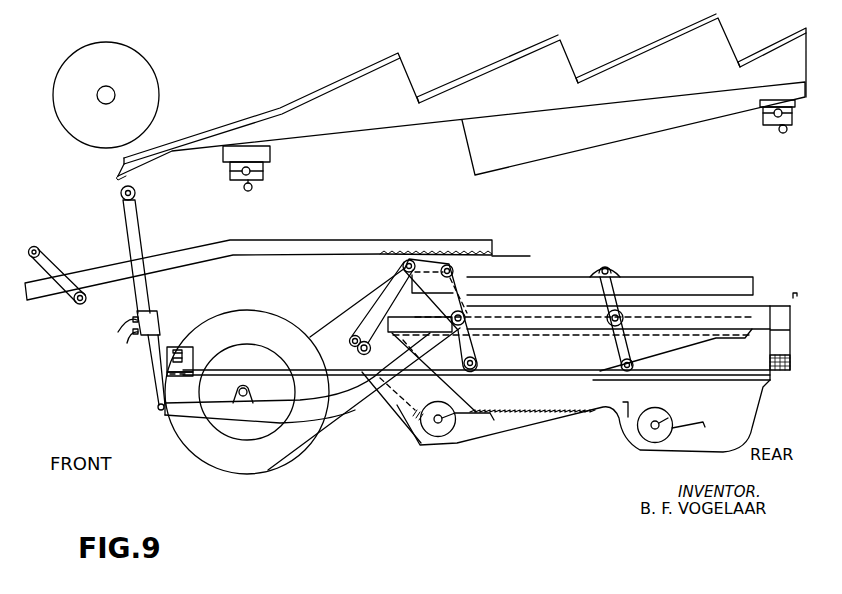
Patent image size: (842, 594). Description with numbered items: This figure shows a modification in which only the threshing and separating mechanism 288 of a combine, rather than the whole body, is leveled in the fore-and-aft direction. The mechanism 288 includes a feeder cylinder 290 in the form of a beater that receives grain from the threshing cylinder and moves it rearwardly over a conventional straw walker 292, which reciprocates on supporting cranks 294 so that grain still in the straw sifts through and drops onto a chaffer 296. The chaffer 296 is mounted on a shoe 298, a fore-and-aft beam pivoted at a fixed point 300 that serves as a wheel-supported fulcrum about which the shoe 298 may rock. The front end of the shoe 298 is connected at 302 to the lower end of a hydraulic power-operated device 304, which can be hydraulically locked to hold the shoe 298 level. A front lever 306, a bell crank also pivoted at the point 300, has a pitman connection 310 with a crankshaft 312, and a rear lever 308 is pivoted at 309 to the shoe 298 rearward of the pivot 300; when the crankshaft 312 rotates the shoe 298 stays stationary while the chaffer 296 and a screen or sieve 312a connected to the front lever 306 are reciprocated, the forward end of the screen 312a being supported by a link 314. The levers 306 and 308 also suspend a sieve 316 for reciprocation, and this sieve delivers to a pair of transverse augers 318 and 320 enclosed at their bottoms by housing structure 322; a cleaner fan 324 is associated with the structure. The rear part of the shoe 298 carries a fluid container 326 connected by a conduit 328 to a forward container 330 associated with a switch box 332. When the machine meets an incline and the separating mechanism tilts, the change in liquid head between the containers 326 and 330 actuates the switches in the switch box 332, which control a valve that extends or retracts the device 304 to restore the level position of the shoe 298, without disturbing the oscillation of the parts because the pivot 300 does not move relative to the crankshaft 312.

The threshing mechanism 288 is at (306, 74).
The feeder cylinder 290 is at (150, 75).
The straw walker 292 is at (495, 75).
The supporting cranks 294 is at (253, 187).
The chaffer 296 is at (713, 282).
The shoe 298 is at (773, 310).
The pivot 300 is at (473, 333).
The connection 302 is at (157, 412).
The power-operated device 304 is at (132, 237).
The front lever 306 is at (452, 288).
The rear lever 308 is at (610, 287).
The pivot 309 is at (614, 326).
The pitman connection 310 is at (380, 302).
The crankshaft 312 is at (350, 345).
The screen or sieve 312a is at (335, 242).
The link 314 is at (57, 246).
The sieve 316 is at (531, 392).
The transverse auger 318 is at (438, 437).
The transverse auger 320 is at (650, 437).
The housing structure 322 is at (600, 408).
The cleaner fan 324 is at (285, 450).
The fluid container 326 is at (789, 373).
The conduit 328 is at (728, 382).
The forward container 330 is at (182, 375).
The switch box 332 is at (192, 347).